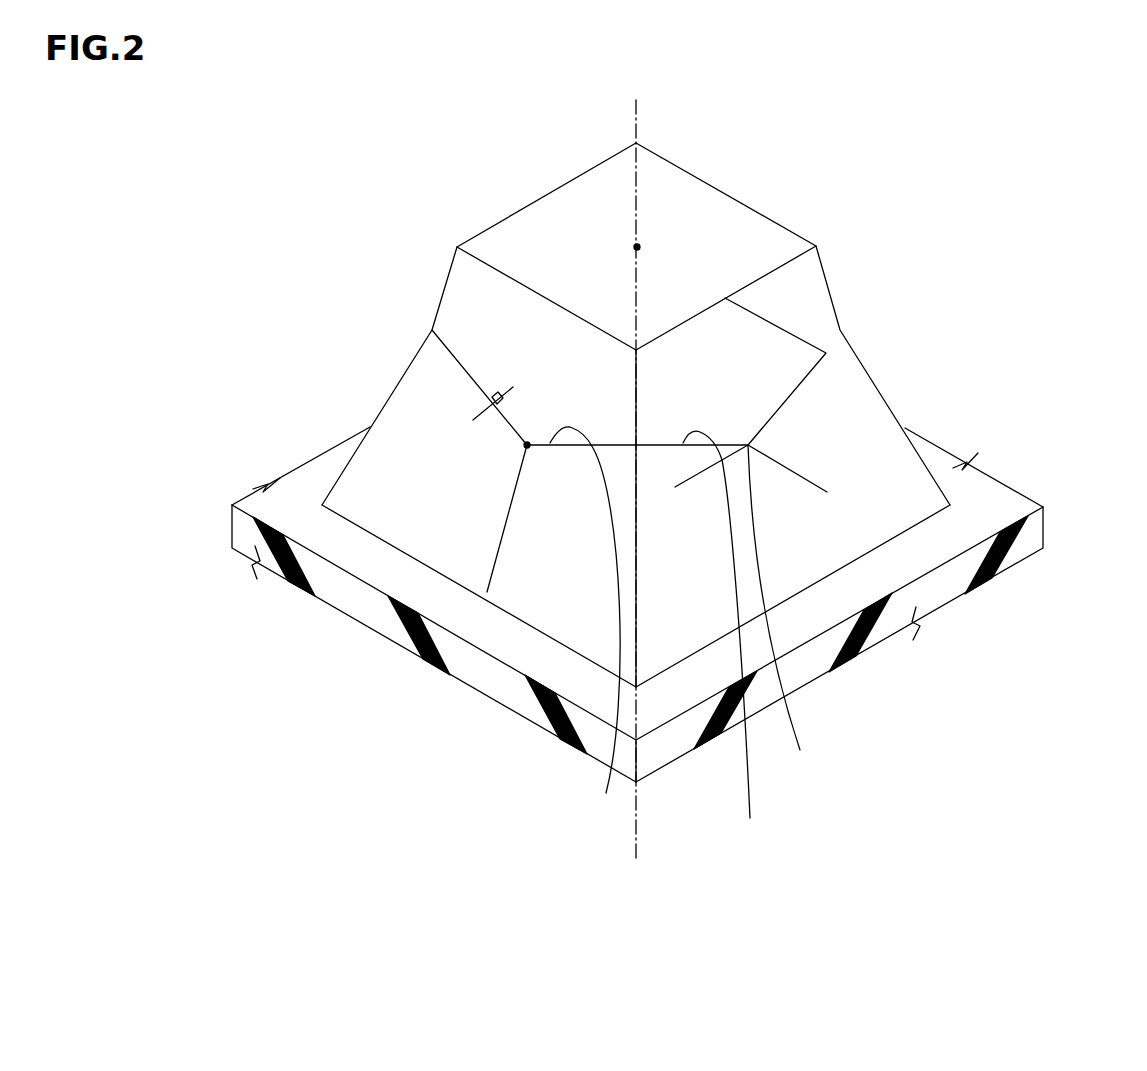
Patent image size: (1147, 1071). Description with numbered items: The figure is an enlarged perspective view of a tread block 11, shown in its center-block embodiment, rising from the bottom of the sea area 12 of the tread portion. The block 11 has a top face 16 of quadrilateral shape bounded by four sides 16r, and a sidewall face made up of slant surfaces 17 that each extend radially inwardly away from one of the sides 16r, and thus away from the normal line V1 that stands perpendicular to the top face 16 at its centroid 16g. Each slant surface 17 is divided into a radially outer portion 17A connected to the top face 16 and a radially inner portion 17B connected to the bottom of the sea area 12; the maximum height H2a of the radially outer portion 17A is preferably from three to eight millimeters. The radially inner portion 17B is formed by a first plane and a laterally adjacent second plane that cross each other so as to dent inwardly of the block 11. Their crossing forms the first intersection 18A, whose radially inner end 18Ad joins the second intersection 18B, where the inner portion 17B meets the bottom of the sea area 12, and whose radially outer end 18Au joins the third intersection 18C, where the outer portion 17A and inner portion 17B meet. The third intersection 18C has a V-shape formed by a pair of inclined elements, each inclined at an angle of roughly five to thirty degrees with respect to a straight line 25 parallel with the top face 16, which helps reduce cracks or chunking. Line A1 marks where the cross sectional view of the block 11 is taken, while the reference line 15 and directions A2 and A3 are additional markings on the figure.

The block 11 is at (545, 150).
The sea area 12 is at (980, 518).
The boundary line 15 is at (470, 372).
The top face 16 is at (631, 221).
The sides 16r is at (533, 197).
The centroid 16g is at (663, 246).
The slant surfaces 17 is at (1063, 278).
The radially outer portion 17A is at (490, 317).
The radially inner portion 17B is at (848, 393).
The first intersection 18A is at (619, 570).
The radially outer end 18Au is at (527, 445).
The radially inner end 18Ad is at (553, 578).
The second intersection 18B is at (341, 514).
The third intersection 18C is at (613, 551).
The straight line 25 is at (811, 766).
The normal line V1 is at (642, 122).
The line A1- A1 is at (577, 270).
The direction A2 is at (513, 387).
The direction A3 is at (445, 242).
The maximum height H2a is at (826, 353).